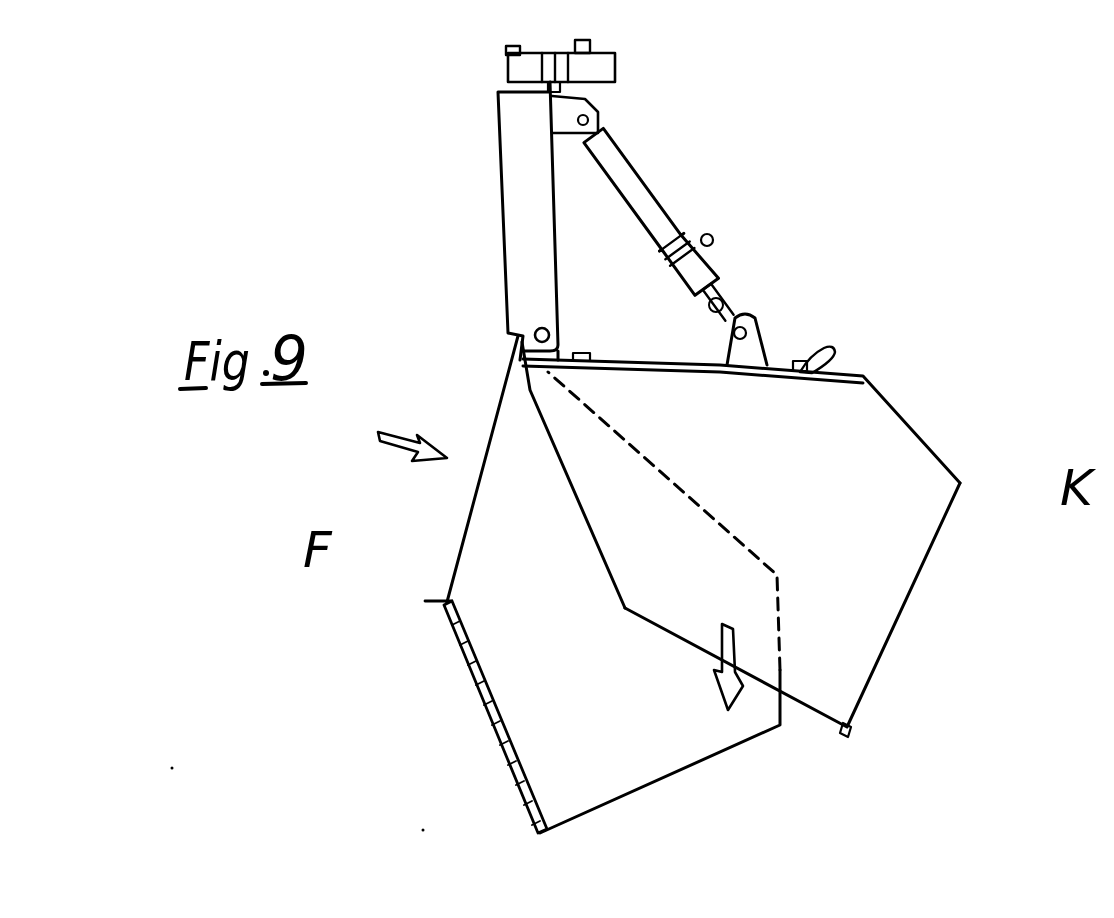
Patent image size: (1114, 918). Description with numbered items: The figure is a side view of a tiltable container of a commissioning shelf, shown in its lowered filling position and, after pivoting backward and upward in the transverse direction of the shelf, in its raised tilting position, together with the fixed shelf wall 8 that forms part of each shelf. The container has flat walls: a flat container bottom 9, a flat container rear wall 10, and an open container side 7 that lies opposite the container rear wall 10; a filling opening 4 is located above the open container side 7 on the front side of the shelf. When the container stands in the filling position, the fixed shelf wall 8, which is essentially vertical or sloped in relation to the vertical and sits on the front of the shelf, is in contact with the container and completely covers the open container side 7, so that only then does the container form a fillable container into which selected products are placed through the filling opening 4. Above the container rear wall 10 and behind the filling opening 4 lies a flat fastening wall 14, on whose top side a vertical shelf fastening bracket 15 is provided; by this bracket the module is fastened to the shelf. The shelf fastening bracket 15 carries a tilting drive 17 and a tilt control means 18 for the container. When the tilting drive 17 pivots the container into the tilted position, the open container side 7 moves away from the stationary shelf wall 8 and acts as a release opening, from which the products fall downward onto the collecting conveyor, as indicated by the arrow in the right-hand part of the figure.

The filling opening 4 is at (476, 422).
The open container side 7 is at (664, 640).
The fixed shelf wall 8 is at (436, 622).
The container bottom 9 is at (912, 615).
The container rear wall 10 is at (935, 435).
The fastening wall 14 is at (858, 371).
The shelf fastening bracket 15 is at (517, 197).
The tilting drive 17 is at (640, 197).
The tilt control means 18 is at (605, 65).